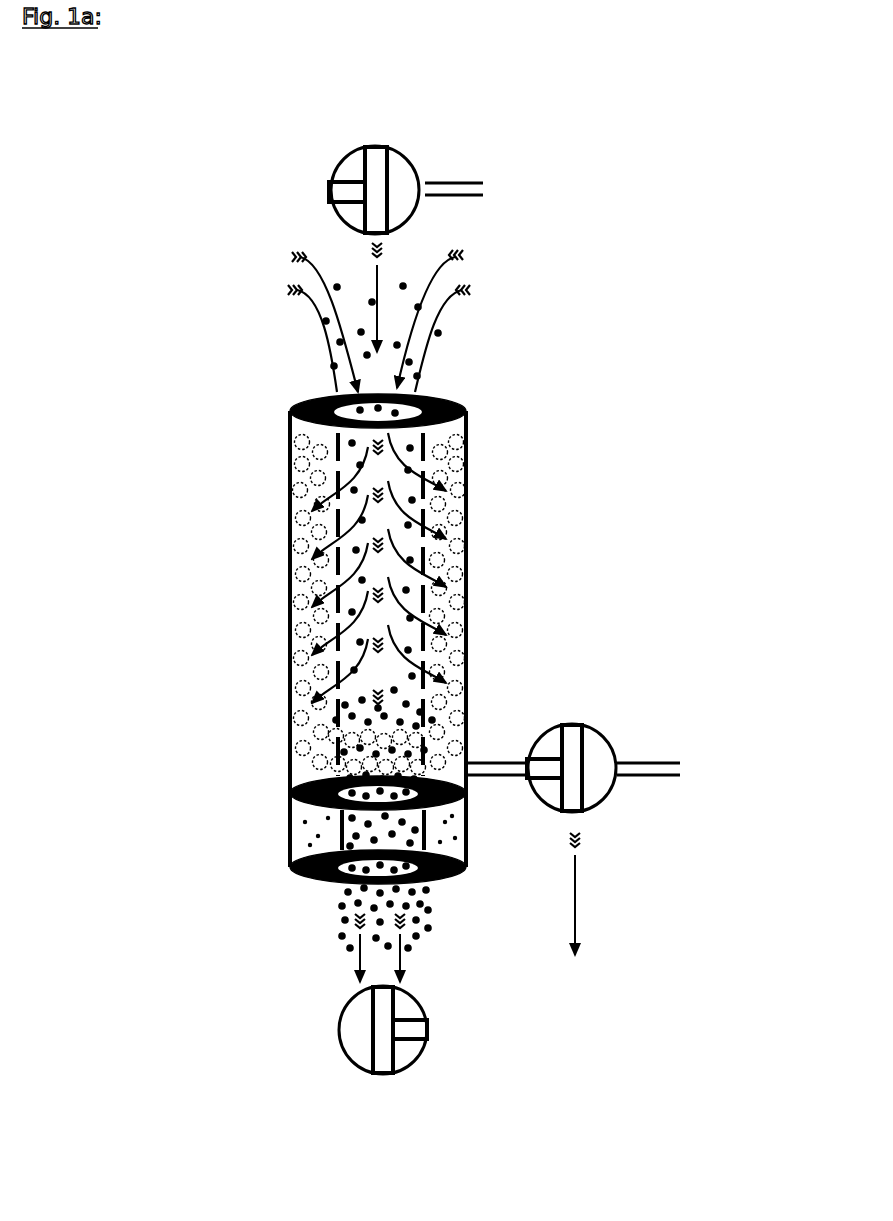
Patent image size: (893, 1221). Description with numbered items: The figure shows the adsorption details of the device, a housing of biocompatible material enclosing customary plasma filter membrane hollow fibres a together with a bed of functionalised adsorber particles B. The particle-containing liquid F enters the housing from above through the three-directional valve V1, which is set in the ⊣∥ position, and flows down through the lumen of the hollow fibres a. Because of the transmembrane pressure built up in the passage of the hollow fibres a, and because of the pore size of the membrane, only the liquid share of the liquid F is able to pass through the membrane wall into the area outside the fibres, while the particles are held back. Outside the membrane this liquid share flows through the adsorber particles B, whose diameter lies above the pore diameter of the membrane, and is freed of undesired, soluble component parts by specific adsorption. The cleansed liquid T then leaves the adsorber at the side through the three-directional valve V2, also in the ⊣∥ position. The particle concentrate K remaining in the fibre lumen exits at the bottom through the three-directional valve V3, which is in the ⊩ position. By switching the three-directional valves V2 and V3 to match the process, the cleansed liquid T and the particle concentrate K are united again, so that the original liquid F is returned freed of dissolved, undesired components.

The three-directional valve V1 is at (322, 184).
The liquid F is at (446, 272).
The feed particles Z is at (448, 333).
The hollow fibres a is at (428, 468).
The adsorber particles B is at (456, 555).
The three-directional valve V2 is at (581, 716).
The liquid T is at (601, 894).
The particle concentrate K is at (330, 930).
The three-directional valve V3 is at (434, 1012).